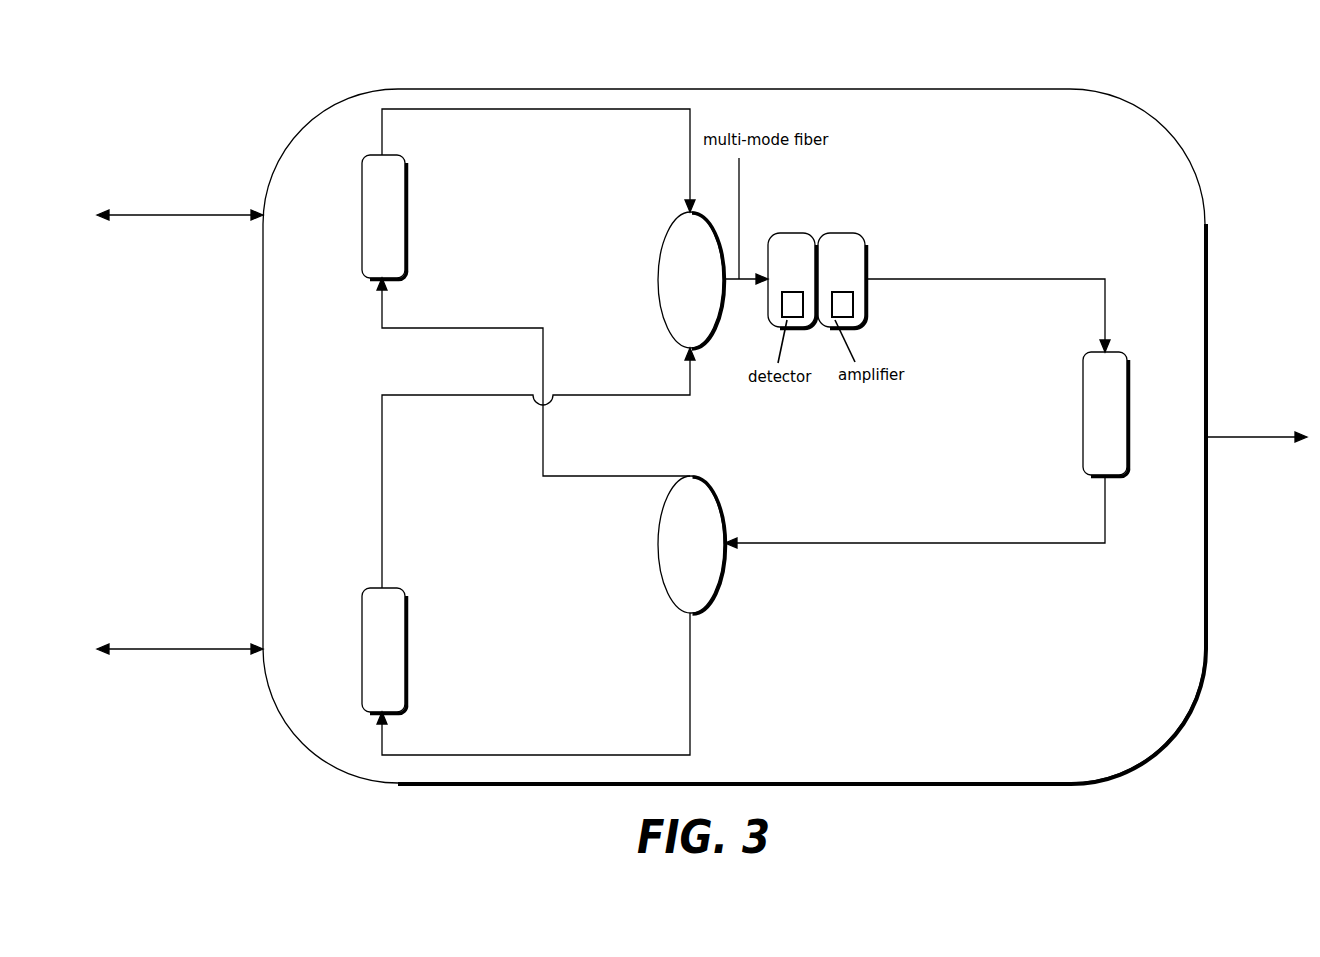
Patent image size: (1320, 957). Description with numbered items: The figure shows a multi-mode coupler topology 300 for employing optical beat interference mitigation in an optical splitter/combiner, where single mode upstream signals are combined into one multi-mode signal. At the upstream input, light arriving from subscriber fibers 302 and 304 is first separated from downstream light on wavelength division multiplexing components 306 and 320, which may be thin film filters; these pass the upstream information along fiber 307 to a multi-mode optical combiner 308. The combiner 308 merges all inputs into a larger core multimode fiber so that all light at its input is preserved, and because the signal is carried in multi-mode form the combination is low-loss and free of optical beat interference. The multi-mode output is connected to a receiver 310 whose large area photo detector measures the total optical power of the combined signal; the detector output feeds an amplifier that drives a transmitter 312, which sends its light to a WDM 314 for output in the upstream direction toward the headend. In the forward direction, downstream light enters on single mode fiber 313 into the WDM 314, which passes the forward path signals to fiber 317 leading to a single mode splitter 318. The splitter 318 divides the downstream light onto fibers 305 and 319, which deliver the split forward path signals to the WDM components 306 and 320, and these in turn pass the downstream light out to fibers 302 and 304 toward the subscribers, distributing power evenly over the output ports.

The multi-mode coupler topology 300 is at (1233, 103).
The fiber 302 is at (180, 215).
The fiber 304 is at (178, 649).
The fiber 305 is at (503, 328).
The WDM component 306 is at (405, 215).
The fiber 307 is at (539, 109).
The multi-mode optical combiner 308 is at (657, 279).
The receiver with photo detector 310 is at (790, 233).
The transmitter 312 is at (836, 233).
The fiber 313 is at (1255, 437).
The WDM 314 is at (1127, 412).
The fiber 317 is at (943, 543).
The single mode splitter 318 is at (658, 545).
The fiber 319 is at (612, 755).
The optical component 320 is at (405, 648).